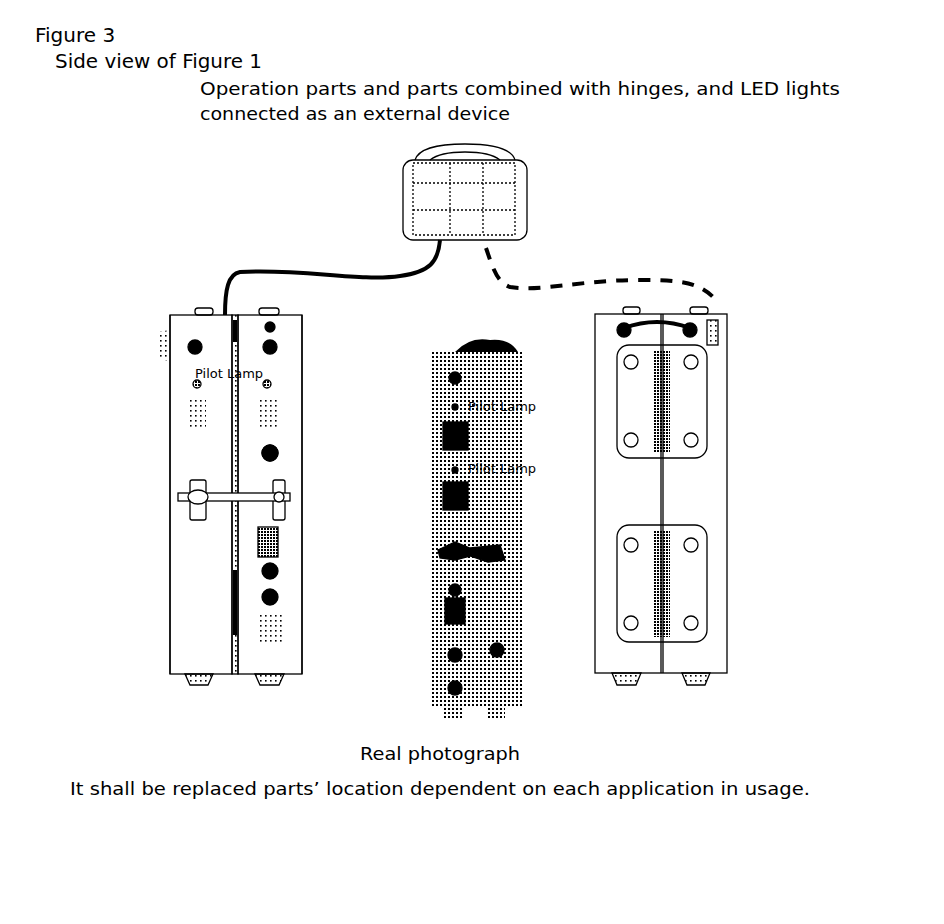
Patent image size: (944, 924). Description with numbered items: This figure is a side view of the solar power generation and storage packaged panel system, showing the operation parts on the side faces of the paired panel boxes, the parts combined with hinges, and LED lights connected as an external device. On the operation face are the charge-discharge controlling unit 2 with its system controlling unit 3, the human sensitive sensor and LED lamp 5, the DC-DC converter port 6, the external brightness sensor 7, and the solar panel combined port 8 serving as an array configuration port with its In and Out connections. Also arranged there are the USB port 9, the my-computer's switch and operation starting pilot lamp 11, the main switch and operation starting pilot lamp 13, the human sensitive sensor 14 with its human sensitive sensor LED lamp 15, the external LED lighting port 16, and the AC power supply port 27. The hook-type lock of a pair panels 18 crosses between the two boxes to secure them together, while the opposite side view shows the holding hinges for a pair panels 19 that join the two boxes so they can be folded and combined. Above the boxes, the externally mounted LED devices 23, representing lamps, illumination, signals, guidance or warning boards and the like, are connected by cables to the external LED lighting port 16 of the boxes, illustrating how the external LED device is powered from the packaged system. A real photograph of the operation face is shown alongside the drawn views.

The charge-discharge controlling unit 2 is at (302, 454).
The system controlling unit 3 is at (301, 454).
The human sensitive sensor and LED lamp 5 is at (291, 628).
The DC-DC converter port 6 is at (362, 629).
The external brightness sensor 7 is at (294, 325).
The solar panel combined port 8 is at (365, 491).
The USB port 9 is at (359, 562).
The my-computer's switch and operation starting pilot lamp 11 is at (297, 455).
The main switch and operation starting pilot lamp 13 is at (363, 425).
The human sensitive sensor 14 is at (116, 494).
The human sensitive sensor LED lamp 15 is at (202, 494).
The external LED lighting port 16 is at (511, 354).
The lock of a pair panels in hook type 18 is at (314, 521).
The holding hinges for a pair panels 19 is at (630, 493).
The externally mounted LED devices 23 is at (470, 229).
The AC power supply port 27 is at (429, 611).